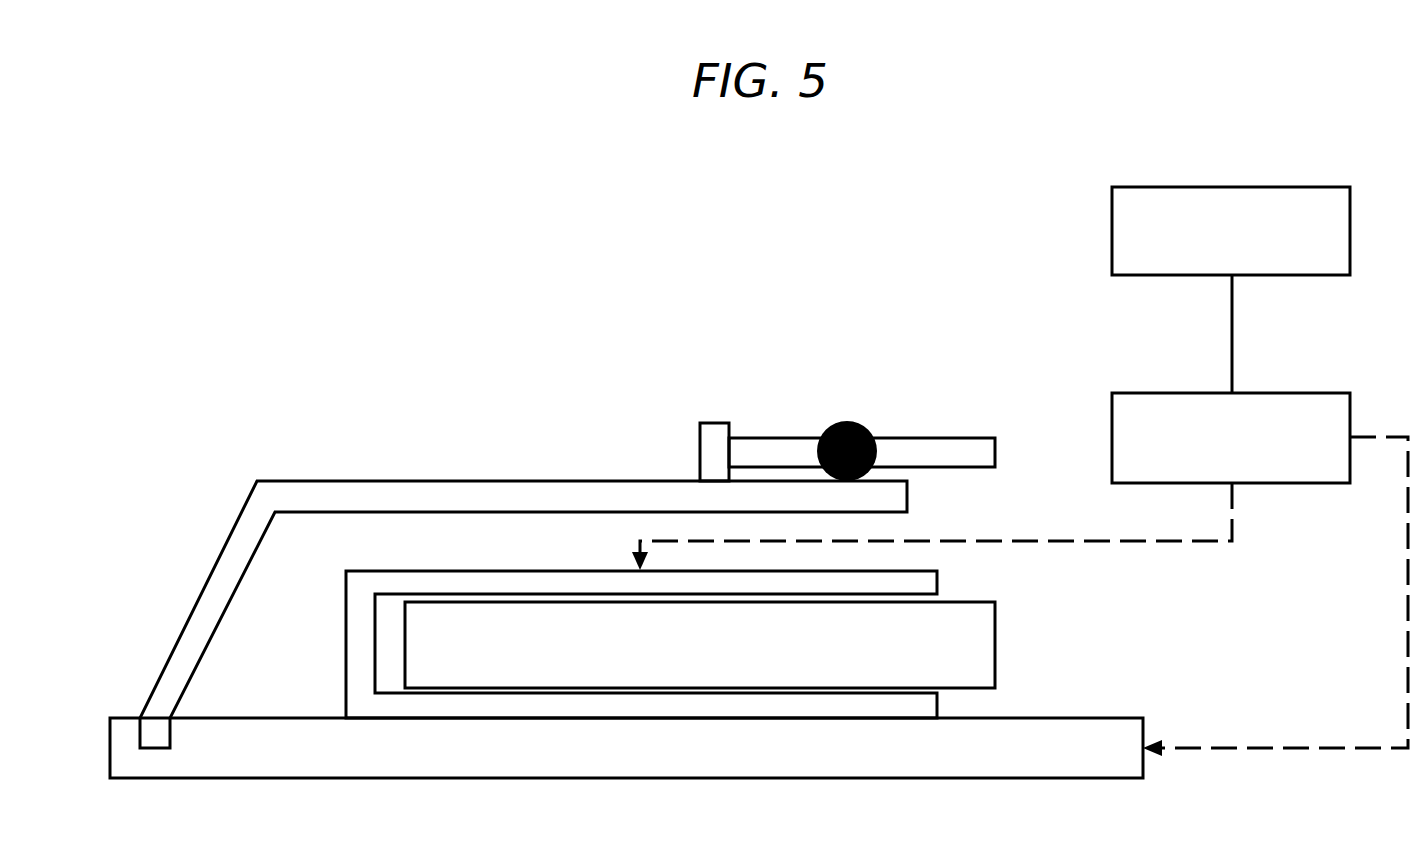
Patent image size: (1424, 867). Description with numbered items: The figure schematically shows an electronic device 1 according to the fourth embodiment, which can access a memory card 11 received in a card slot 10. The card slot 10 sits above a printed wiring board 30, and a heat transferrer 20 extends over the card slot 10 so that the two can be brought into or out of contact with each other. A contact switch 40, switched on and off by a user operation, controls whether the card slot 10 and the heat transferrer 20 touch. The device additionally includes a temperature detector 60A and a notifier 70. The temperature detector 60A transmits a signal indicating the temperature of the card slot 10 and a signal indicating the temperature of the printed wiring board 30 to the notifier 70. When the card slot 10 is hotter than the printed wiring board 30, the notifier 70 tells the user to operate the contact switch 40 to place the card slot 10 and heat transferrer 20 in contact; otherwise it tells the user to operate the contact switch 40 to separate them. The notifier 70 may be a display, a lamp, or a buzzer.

The electronic device 1 is at (527, 292).
The card slot 10 is at (346, 630).
The memory card 11 is at (995, 628).
The heat transferrer 20 is at (347, 481).
The printed wiring board 30 is at (848, 777).
The contact switch 40 is at (935, 438).
The temperature detector 60A is at (1290, 393).
The notifier 70 is at (1172, 275).